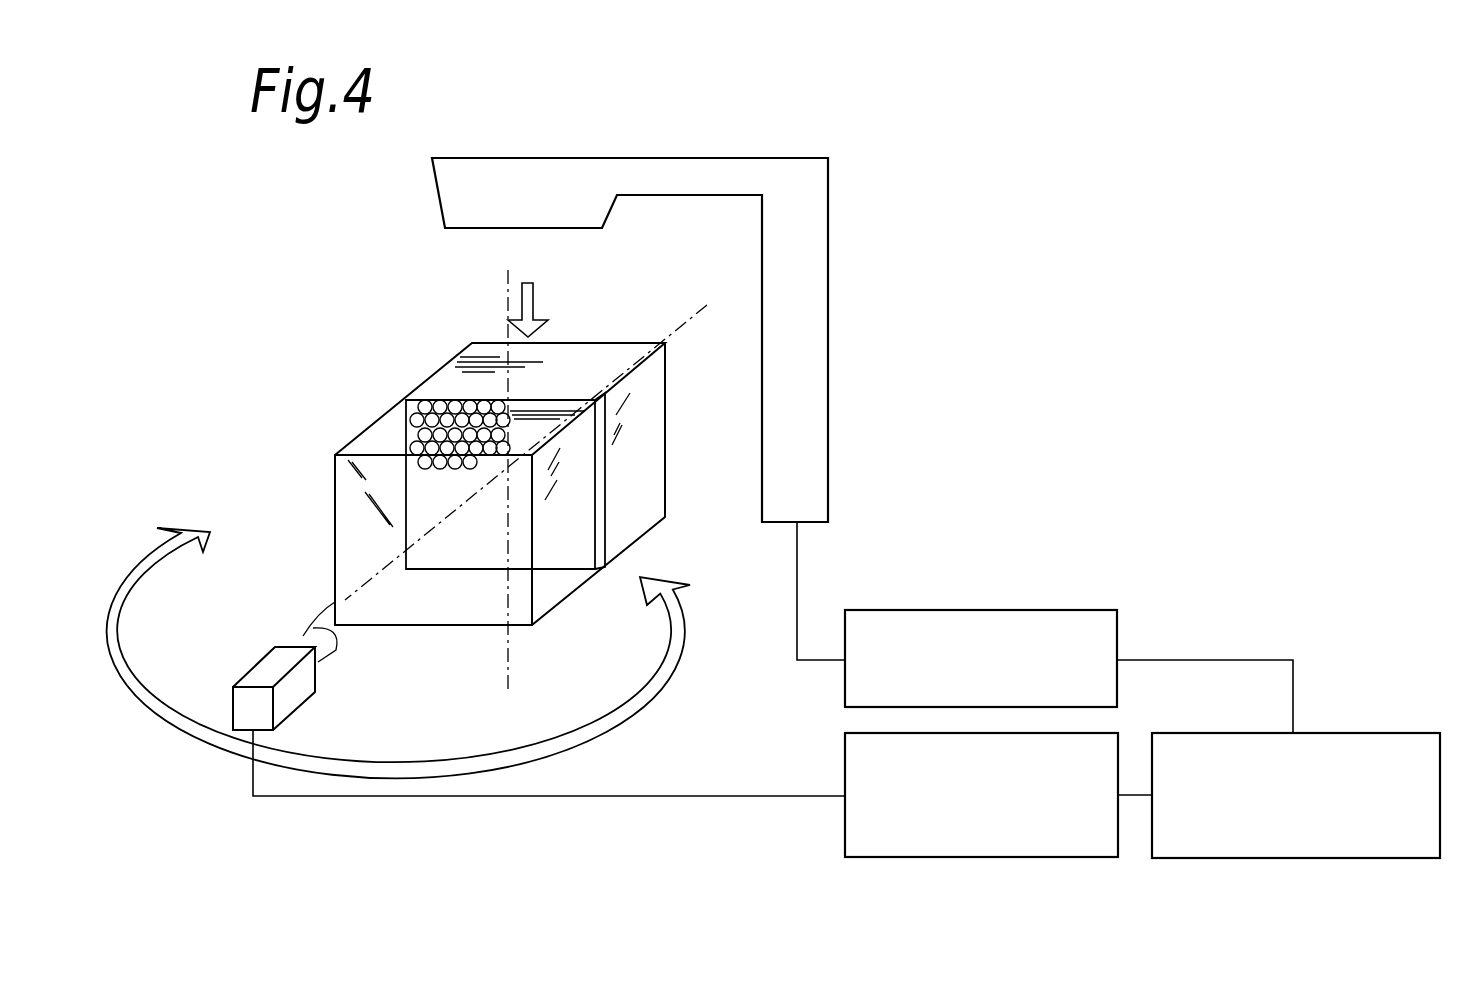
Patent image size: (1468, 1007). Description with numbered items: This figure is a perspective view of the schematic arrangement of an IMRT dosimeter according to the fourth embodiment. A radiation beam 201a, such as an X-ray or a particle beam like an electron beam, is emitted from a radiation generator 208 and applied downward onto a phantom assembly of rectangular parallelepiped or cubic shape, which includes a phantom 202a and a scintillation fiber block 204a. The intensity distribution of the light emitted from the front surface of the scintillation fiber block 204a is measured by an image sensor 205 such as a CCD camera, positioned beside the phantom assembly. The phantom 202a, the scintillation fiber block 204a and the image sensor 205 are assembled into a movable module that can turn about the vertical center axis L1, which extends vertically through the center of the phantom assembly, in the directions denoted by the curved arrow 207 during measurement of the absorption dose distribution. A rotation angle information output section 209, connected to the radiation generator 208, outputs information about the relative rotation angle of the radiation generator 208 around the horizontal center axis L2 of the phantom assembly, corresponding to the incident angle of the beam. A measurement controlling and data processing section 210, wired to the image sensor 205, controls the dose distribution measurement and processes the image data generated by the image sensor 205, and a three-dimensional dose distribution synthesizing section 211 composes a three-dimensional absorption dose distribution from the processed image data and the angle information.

The radiation beam 201a is at (518, 294).
The phantom 202a is at (372, 440).
The scintillation fiber block 204a is at (427, 402).
The image sensor 205 is at (290, 687).
The arrow 207 is at (653, 698).
The radiation generator 208 is at (458, 202).
The rotation angle information output section 209 is at (938, 610).
The measurement controlling & data processing section 210 is at (912, 860).
The three-dimensional dose distribution synthesizing section 211 is at (1252, 860).
The vertical center axis L1 is at (511, 650).
The horizontal center axis L2 is at (694, 322).